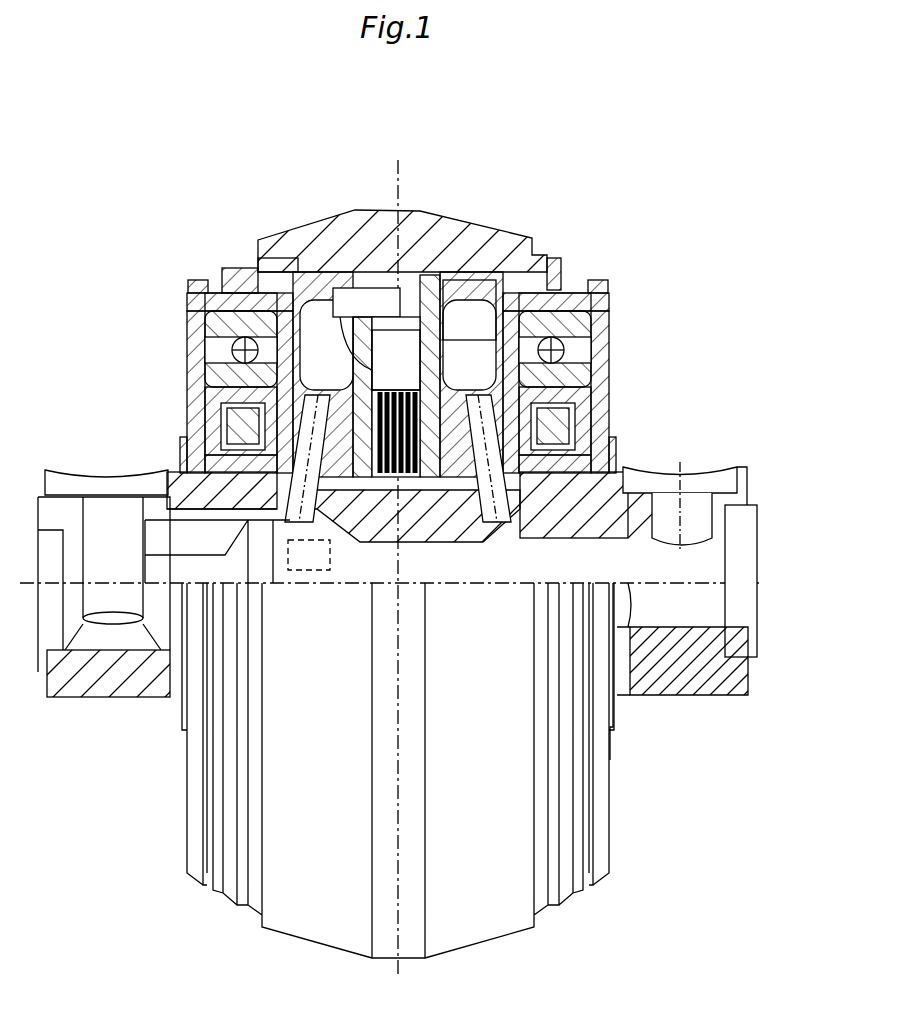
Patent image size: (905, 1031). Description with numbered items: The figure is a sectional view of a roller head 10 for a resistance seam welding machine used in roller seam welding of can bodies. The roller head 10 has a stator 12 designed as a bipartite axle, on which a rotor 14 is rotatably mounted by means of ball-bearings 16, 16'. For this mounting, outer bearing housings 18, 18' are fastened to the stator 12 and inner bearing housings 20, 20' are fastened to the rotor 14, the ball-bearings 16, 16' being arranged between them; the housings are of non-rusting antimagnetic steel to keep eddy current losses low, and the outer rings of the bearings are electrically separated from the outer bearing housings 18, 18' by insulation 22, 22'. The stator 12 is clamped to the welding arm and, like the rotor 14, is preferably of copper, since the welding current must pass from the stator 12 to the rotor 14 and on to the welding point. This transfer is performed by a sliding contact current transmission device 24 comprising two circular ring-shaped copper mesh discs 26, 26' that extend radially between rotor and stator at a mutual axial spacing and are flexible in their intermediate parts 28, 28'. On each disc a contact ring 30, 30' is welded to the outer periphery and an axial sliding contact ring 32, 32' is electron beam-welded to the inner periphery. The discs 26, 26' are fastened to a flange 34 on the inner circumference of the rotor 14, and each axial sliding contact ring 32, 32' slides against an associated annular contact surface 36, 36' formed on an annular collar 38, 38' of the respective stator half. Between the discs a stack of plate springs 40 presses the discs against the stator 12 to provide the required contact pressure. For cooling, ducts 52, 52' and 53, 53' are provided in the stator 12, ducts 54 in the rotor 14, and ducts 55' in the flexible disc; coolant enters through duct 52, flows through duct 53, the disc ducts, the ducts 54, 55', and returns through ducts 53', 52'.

The roller head 10 is at (527, 212).
The stator 12 is at (680, 668).
The rotor 14 is at (248, 258).
The ball-bearing 16 is at (624, 345).
The ball-bearing 16' is at (153, 345).
The outer bearing housing 18 is at (624, 273).
The outer bearing housing 18' is at (153, 273).
The inner bearing housing 20 is at (659, 247).
The inner bearing housing 20' is at (119, 247).
The insulation 22 is at (616, 370).
The insulation 22' is at (161, 370).
The sliding contact current transmission device 24 is at (552, 268).
The sliding contact disc 26 is at (398, 406).
The sliding contact disc 26' is at (257, 433).
The intermediate part 28 is at (487, 239).
The intermediate part 28' is at (396, 535).
The contact ring 30 is at (471, 305).
The contact ring 30' is at (323, 315).
The axial sliding contact ring 32 is at (624, 437).
The axial sliding contact ring 32' is at (364, 489).
The flange 34 is at (422, 340).
The annular contact surface 36 is at (634, 356).
The annular contact surface 36' is at (144, 356).
The annular collar 38 is at (495, 536).
The annular collar 38' is at (299, 536).
The stack of plate springs 40 is at (218, 418).
The duct 52 is at (685, 492).
The duct 52' is at (108, 617).
The duct 53 is at (624, 412).
The duct 53' is at (153, 412).
The duct 54 is at (396, 330).
The duct 55' is at (330, 254).